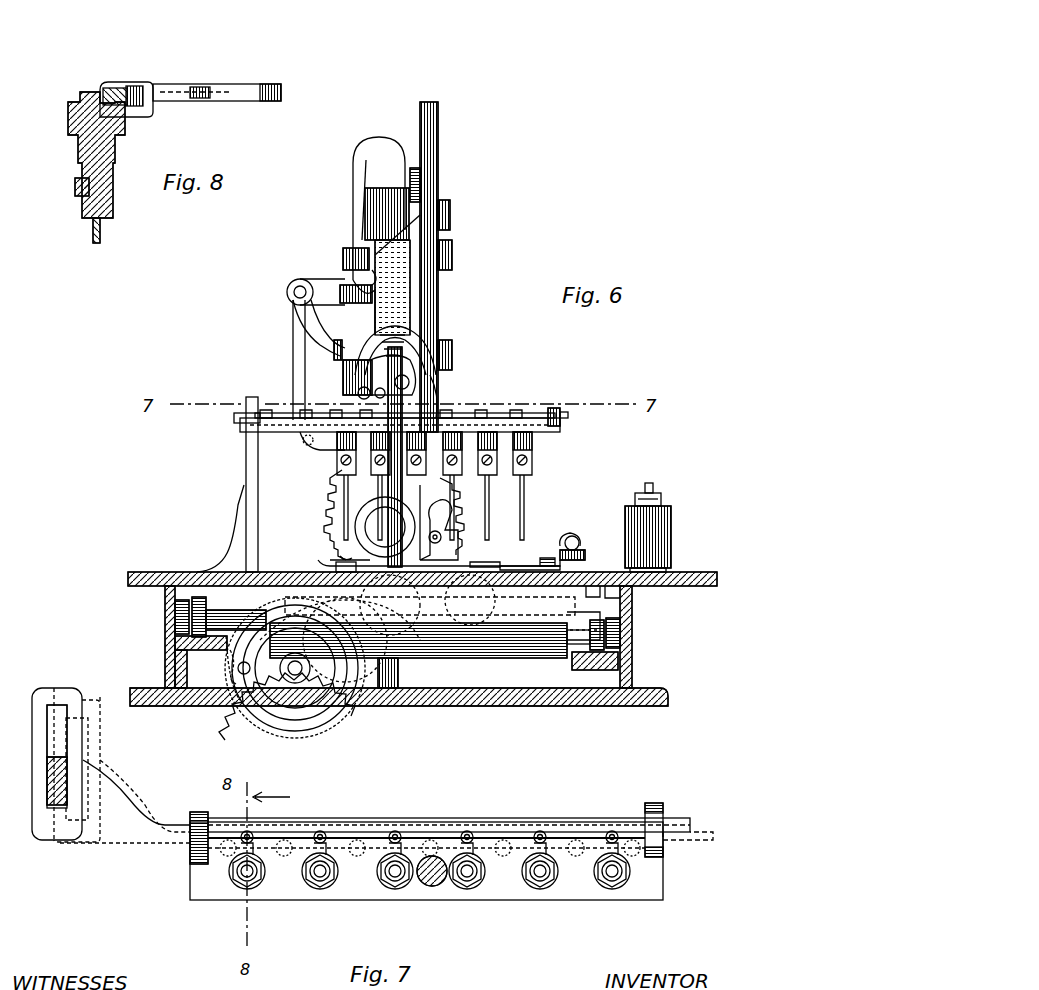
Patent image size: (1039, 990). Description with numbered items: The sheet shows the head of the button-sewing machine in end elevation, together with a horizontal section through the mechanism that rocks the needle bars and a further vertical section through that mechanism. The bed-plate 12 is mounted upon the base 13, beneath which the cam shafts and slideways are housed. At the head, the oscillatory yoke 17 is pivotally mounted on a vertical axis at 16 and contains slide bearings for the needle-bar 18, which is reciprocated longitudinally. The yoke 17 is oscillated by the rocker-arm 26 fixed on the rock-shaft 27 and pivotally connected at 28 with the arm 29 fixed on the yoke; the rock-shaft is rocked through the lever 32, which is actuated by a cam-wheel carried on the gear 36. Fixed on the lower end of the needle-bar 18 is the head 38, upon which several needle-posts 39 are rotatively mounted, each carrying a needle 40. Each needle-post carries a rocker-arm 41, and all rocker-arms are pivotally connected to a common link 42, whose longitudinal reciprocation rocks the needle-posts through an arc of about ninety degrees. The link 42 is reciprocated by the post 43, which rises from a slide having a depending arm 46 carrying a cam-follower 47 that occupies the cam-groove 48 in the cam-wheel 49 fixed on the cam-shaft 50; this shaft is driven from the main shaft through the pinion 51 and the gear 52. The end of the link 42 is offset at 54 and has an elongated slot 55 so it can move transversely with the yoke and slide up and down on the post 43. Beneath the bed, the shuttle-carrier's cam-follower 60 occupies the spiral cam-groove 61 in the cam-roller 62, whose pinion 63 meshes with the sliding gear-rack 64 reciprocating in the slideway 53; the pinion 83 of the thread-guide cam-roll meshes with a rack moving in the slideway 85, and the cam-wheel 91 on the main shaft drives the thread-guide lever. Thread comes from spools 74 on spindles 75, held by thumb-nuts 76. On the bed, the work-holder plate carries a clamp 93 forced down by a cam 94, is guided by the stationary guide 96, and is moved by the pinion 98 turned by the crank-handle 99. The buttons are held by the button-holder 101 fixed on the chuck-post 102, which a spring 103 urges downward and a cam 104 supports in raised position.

In FIG. 6, the bed-plate 12 is at (137, 574).
In FIG. 6, the base 13 is at (692, 574).
In FIG. 6, the vertical pivot axis 16 is at (352, 248).
In FIG. 6, the oscillatory yoke 17 is at (412, 292).
In FIG. 6, the needle-bar 18 is at (440, 166).
In FIG. 7, the needle-bar 18 is at (440, 882).
In FIG. 6, the rocker-arm 26 is at (335, 347).
In FIG. 6, the rock-shaft 27 is at (288, 294).
In FIG. 6, the pivotal connection 28 is at (325, 338).
In FIG. 6, the arm 29 is at (338, 356).
In FIG. 6, the lever 32 is at (448, 400).
In FIG. 6, the gear 36 is at (332, 547).
In FIG. 8, the head 38 is at (70, 124).
In FIG. 6, the head 38 is at (553, 431).
In FIG. 7, the head 38 is at (652, 876).
In FIG. 8, the needle-posts 39 is at (92, 90).
In FIG. 6, the needle-posts 39 is at (372, 456).
In FIG. 7, the needle-posts 39 is at (260, 880).
In FIG. 8, the needle 40 is at (94, 232).
In FIG. 6, the needle 40 is at (330, 540).
In FIG. 8, the rocker-arm 41 is at (113, 90).
In FIG. 6, the rocker-arm 41 is at (482, 410).
In FIG. 7, the rocker-arm 41 is at (258, 835).
In FIG. 8, the common link 42 is at (143, 90).
In FIG. 6, the common link 42 is at (542, 416).
In FIG. 7, the common link 42 is at (360, 826).
In FIG. 6, the post 43 is at (246, 463).
In FIG. 7, the post 43 is at (52, 788).
In FIG. 6, the depending arm 46 is at (230, 660).
In FIG. 6, the cam-follower 47 is at (232, 674).
In FIG. 6, the cam-groove 48 is at (275, 712).
In FIG. 6, the cam-wheel 49 is at (318, 716).
In FIG. 6, the cam-shaft 50 is at (300, 381).
In FIG. 6, the pinion 51 is at (322, 436).
In FIG. 6, the gear 52 is at (322, 712).
In FIG. 6, the slideway 53 is at (592, 668).
In FIG. 8, the offset end 54 is at (280, 88).
In FIG. 6, the offset end 54 is at (240, 418).
In FIG. 7, the offset end 54 is at (111, 754).
In FIG. 6, the elongated slot 55 is at (370, 521).
In FIG. 7, the elongated slot 55 is at (52, 732).
In FIG. 6, the cam-follower 60 is at (590, 618).
In FIG. 6, the spiral cam-groove 61 is at (385, 692).
In FIG. 6, the cam-roller 62 is at (465, 648).
In FIG. 6, the pinion 63 is at (622, 630).
In FIG. 6, the sliding gear-rack 64 is at (630, 656).
In FIG. 6, the spools 74 is at (660, 503).
In FIG. 6, the post or spindle 75 is at (672, 522).
In FIG. 6, the thumb-nuts 76 is at (652, 490).
In FIG. 6, the pinion 83 is at (180, 621).
In FIG. 6, the slideway 85 is at (178, 645).
In FIG. 6, the cam-wheel 91 is at (416, 660).
In FIG. 6, the clamp 93 is at (470, 590).
In FIG. 6, the cam 94 is at (480, 567).
In FIG. 6, the stationary guide 96 is at (506, 586).
In FIG. 6, the pinion 98 is at (565, 554).
In FIG. 6, the crank-handle 99 is at (578, 536).
In FIG. 6, the chuck-head or button-holder 101 is at (518, 563).
In FIG. 6, the chuck-post 102 is at (447, 500).
In FIG. 6, the spring 103 is at (430, 335).
In FIG. 6, the cam 104 is at (368, 377).